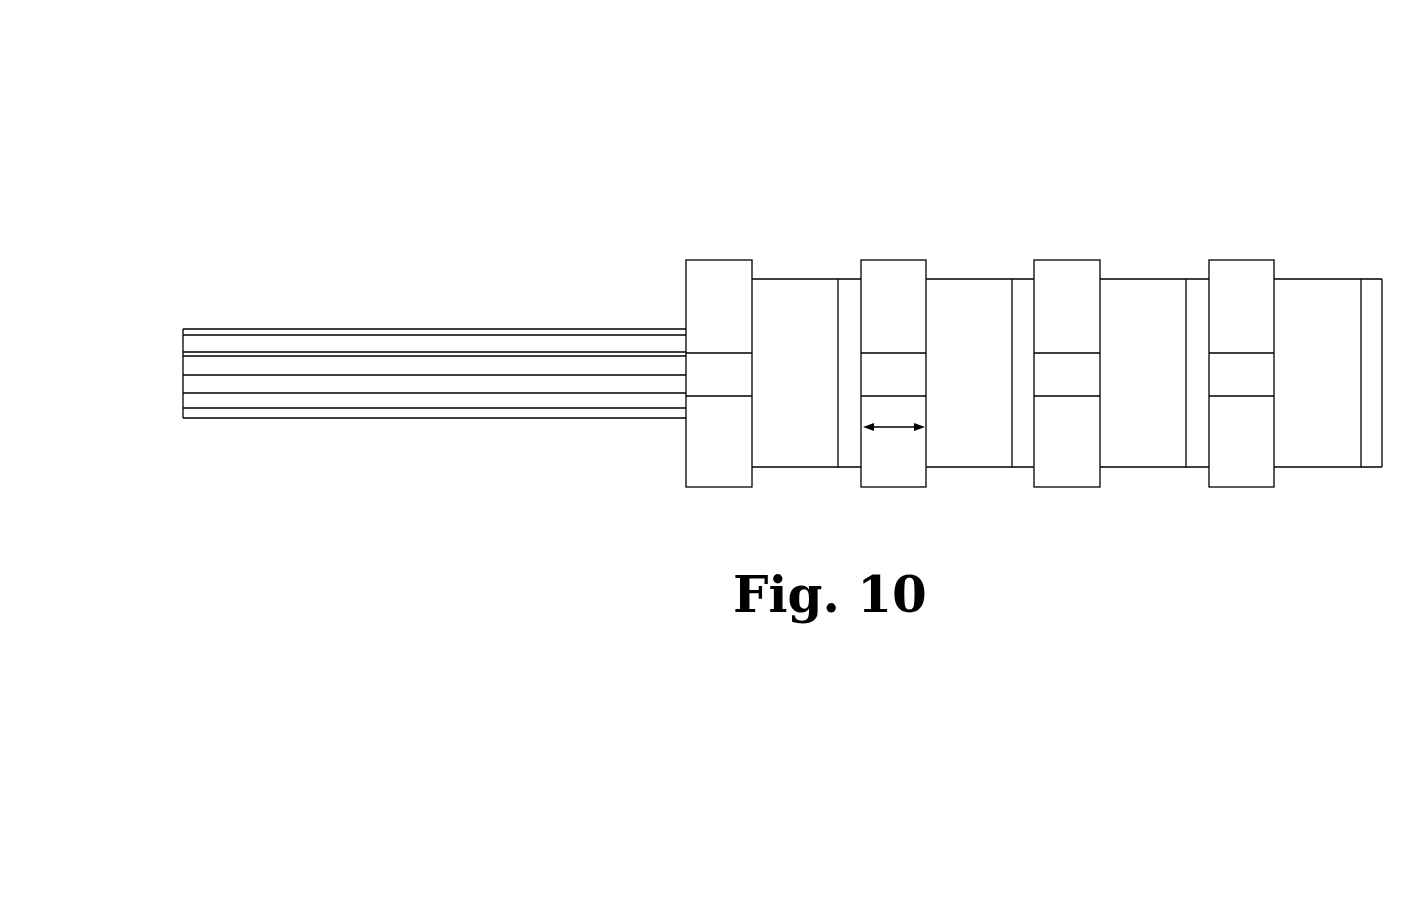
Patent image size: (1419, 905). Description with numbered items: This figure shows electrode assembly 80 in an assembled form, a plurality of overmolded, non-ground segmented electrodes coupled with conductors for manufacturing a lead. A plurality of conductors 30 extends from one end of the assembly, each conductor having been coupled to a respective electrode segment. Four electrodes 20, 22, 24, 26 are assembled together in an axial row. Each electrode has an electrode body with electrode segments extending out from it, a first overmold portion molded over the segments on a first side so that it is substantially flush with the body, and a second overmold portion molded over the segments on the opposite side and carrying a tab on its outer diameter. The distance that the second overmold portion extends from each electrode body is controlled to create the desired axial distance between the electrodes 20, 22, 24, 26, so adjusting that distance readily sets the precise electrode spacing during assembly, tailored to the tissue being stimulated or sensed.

The electrode assembly 80 is at (748, 114).
The conductors 30 is at (253, 275).
The electrode 26 is at (787, 258).
The electrode 24 is at (964, 258).
The electrode 22 is at (1143, 258).
The electrode 20 is at (1317, 258).